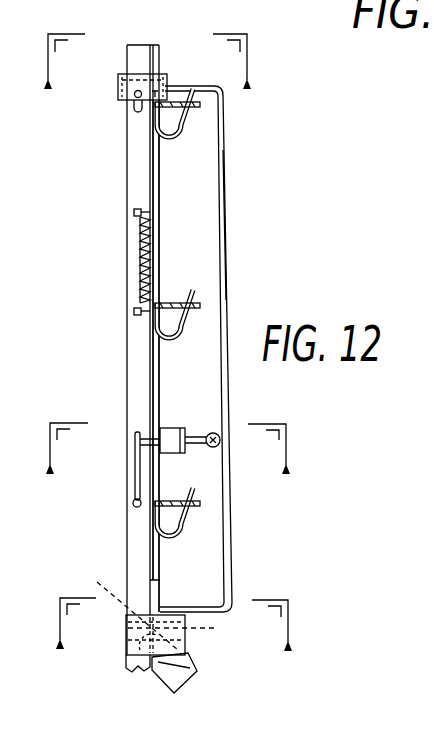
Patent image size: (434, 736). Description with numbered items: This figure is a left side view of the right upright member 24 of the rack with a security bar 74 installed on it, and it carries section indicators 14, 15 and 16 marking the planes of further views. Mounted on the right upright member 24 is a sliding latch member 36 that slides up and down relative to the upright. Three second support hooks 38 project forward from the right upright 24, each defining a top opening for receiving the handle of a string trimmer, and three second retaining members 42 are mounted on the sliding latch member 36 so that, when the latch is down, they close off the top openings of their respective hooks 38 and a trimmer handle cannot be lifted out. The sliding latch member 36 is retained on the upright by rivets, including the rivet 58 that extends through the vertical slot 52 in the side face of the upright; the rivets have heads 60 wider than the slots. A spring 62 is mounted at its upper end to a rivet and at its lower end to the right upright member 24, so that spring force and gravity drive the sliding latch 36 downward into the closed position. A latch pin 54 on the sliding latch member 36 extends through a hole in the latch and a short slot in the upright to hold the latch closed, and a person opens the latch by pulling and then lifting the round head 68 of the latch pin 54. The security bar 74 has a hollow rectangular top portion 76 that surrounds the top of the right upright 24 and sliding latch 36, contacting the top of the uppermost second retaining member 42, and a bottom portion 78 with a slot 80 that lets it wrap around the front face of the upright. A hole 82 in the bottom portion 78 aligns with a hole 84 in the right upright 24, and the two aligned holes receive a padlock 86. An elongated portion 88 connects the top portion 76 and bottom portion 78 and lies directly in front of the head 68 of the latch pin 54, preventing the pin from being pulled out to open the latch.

The right upright member 24 is at (140, 45).
The hollow rectangular top portion 76 is at (118, 98).
The sliding latch member 36 is at (165, 176).
The security bar 74 is at (230, 199).
The elongated portion 88 is at (228, 236).
The second support hooks 38 is at (185, 128).
The second retaining members 42 is at (200, 105).
The heads 60 is at (134, 212).
The spring 62 is at (140, 255).
The vertical slot 52 is at (137, 450).
The rivet 58 is at (133, 504).
The latch pin 54 is at (199, 436).
The round head 68 is at (218, 436).
The bottom portion 78 is at (128, 630).
The hole 84 is at (128, 651).
The hole 82 is at (189, 629).
The slot 80 is at (125, 601).
The padlock 86 is at (192, 670).
The section line 14- 14 is at (149, 75).
The section line 15- 15 is at (162, 461).
The section line 16- 16 is at (164, 637).